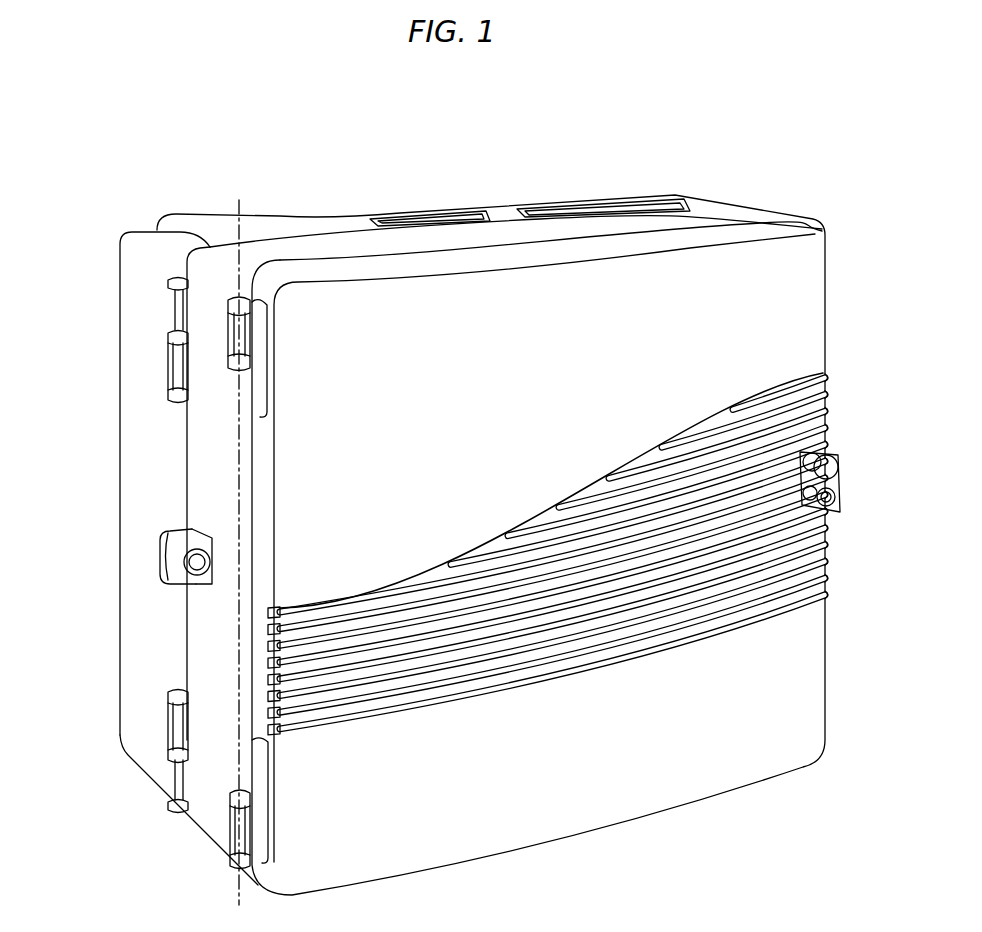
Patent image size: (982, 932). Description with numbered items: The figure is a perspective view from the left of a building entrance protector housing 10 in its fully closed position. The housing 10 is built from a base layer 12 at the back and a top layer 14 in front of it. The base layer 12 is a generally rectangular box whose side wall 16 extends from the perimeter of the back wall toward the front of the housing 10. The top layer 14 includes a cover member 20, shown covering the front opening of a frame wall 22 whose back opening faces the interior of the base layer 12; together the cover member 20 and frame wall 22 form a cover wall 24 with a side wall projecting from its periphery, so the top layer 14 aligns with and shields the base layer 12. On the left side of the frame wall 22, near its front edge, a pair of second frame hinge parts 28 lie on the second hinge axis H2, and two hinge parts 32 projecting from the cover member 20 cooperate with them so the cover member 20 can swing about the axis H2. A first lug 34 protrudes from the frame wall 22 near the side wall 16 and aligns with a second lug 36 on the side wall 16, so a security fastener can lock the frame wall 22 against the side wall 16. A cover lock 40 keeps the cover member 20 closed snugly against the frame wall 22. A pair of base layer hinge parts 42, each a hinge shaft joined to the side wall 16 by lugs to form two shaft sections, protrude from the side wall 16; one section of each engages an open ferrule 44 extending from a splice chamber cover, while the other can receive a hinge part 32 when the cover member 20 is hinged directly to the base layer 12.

The housing 10 is at (833, 232).
The base layer 12 is at (127, 334).
The top layer 14 is at (209, 414).
The side wall 16 is at (347, 226).
The cover member 20 is at (797, 718).
The frame wall 22 is at (228, 657).
The cover wall 24 is at (677, 279).
The second frame hinge parts 28 is at (234, 300).
The hinge parts 32 is at (232, 322).
The first lug 34 is at (175, 570).
The second lug 36 is at (158, 546).
The cover lock 40 is at (823, 454).
The base layer hinge parts 42 is at (175, 308).
The open ferrule 44 is at (167, 376).
The second hinge axis H2 is at (242, 203).